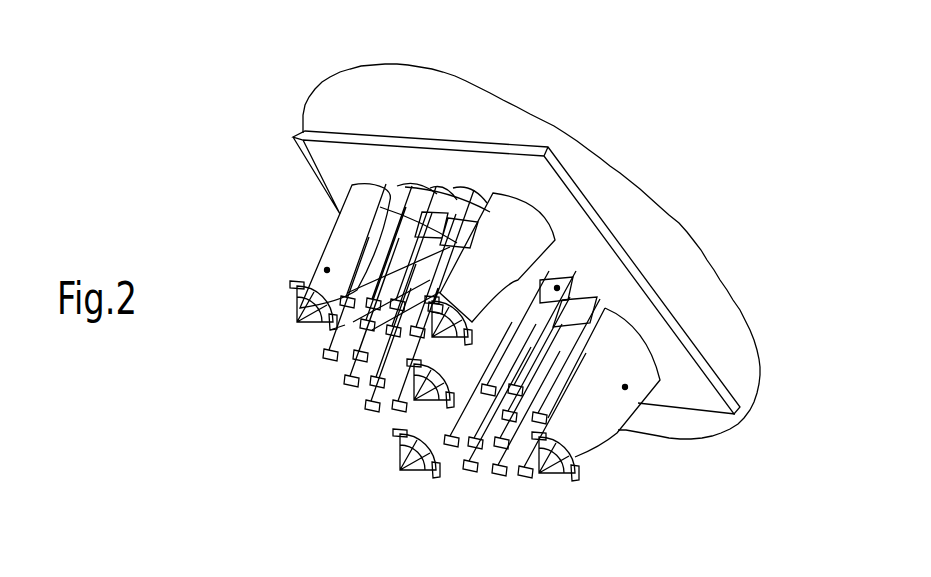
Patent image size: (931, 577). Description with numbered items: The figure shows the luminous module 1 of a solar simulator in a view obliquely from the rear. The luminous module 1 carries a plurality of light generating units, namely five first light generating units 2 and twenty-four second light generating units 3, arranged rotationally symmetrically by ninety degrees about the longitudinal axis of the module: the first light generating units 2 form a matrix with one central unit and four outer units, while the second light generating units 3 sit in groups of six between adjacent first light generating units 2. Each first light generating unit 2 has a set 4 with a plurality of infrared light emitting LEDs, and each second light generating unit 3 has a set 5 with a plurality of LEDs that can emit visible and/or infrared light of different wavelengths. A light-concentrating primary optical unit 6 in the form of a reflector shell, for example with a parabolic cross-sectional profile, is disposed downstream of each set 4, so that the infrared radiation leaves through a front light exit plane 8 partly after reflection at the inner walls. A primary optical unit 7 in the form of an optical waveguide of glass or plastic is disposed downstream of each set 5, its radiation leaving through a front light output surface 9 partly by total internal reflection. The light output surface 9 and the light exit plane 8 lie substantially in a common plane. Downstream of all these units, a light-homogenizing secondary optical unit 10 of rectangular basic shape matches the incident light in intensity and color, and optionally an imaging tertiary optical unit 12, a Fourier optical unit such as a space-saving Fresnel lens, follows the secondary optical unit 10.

The luminous module 1 is at (731, 156).
The first light generating unit 2 is at (507, 248).
The second light generating unit 3 is at (441, 205).
The set of IR LEDs 4 is at (297, 293).
The set of LEDs 5 is at (333, 367).
The primary optical unit 6 is at (327, 270).
The primary optical unit 7 is at (593, 323).
The light exit plane 8 is at (557, 288).
The light output surface 9 is at (658, 351).
The secondary optical unit 10 is at (333, 151).
The tertiary optical unit 12 is at (331, 108).